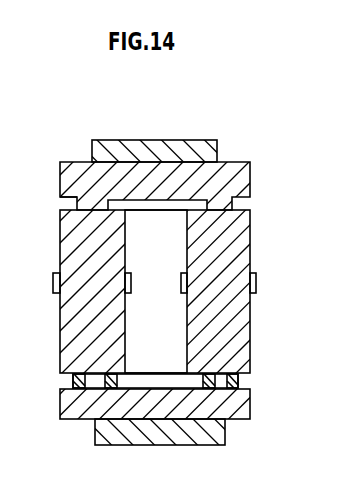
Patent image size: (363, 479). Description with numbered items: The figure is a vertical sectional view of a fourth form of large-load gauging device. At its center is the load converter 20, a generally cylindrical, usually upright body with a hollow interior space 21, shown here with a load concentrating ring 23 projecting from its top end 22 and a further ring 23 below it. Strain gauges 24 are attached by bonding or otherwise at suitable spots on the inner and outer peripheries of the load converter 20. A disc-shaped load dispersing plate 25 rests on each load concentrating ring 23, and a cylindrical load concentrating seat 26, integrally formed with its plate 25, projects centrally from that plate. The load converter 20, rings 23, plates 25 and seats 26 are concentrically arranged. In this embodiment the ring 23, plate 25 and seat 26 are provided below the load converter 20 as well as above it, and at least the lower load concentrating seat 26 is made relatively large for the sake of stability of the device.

The load converter 20 is at (236, 246).
The hollow interior space 21 is at (180, 335).
The top end 22 is at (73, 202).
The load concentrating ring 23 is at (240, 377).
The strain gauges 24 is at (133, 273).
The load dispersing plate 25 is at (236, 177).
The load concentrating seat 26 is at (198, 140).